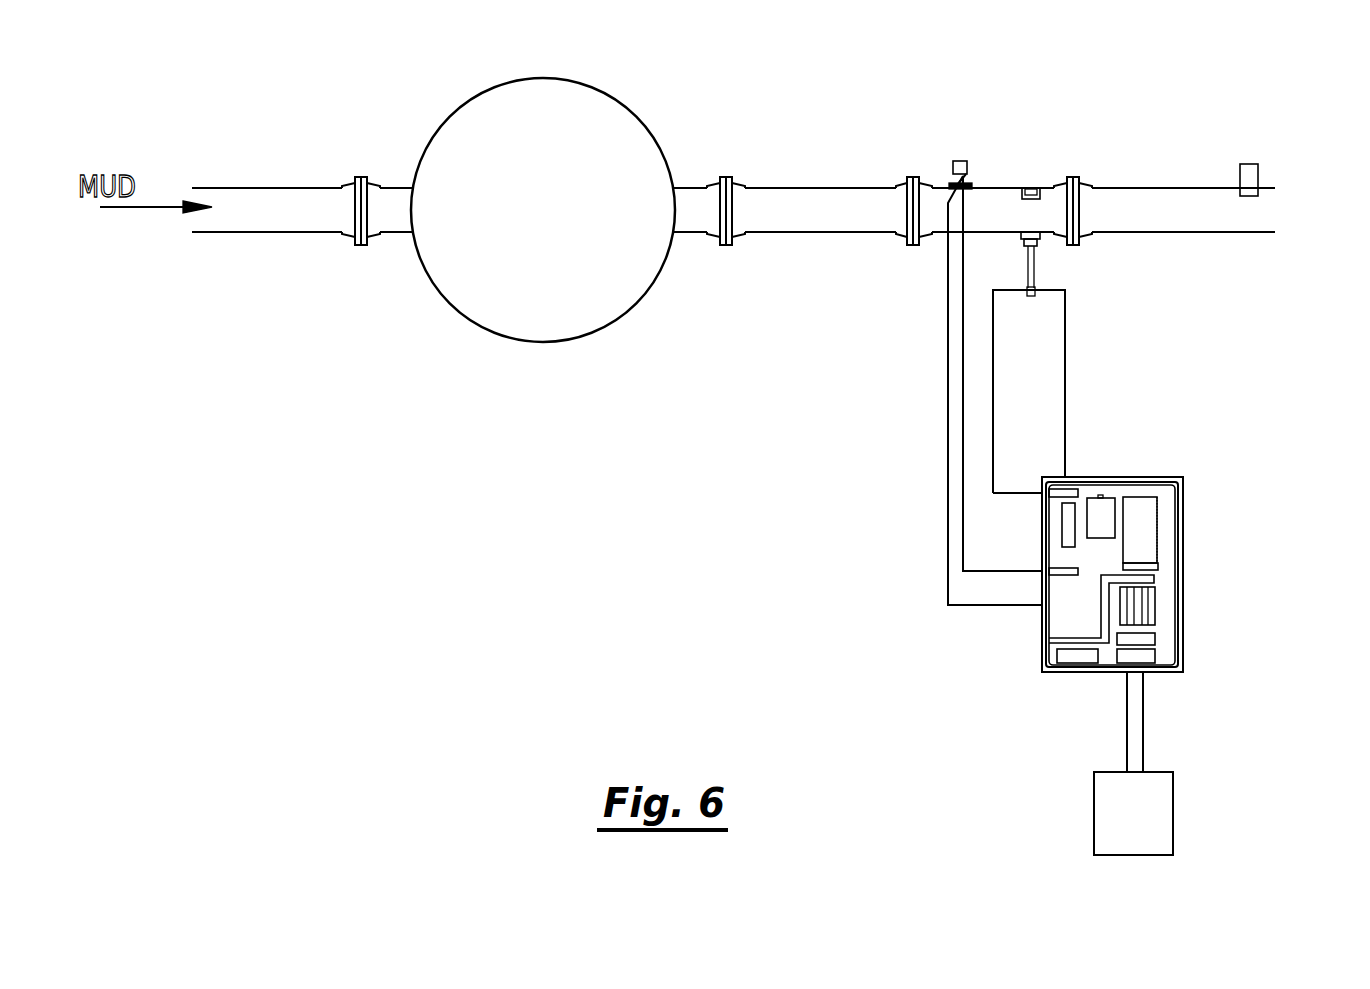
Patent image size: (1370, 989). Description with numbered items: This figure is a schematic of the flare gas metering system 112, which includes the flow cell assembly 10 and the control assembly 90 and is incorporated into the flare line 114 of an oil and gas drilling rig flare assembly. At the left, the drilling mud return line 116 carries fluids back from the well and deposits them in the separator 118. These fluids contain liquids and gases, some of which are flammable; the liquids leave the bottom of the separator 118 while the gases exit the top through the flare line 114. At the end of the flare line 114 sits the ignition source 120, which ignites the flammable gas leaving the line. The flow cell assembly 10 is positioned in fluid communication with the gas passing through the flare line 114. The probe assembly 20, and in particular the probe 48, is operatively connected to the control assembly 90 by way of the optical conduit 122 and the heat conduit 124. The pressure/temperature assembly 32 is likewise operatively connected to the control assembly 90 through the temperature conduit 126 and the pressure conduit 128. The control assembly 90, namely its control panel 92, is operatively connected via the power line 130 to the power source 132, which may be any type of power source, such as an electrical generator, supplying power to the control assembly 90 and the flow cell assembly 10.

The flow cell assembly 10 is at (998, 170).
The probe assembly 20 is at (1036, 250).
The pressure/temperature assembly 32 is at (959, 160).
The probe 48 is at (1036, 268).
The control assembly 90 is at (1198, 594).
The control panel 92 is at (1070, 675).
The flare gas metering system 112 is at (1255, 388).
The flare line 114 is at (793, 195).
The drilling mud return line 116 is at (270, 205).
The separator 118 is at (601, 90).
The ignition source 120 is at (1248, 168).
The optical conduit 122 is at (1066, 413).
The heat conduit 124 is at (995, 384).
The temperature conduit 126 is at (990, 570).
The pressure conduit 128 is at (982, 607).
The power line 130 is at (1144, 713).
The power source 132 is at (1107, 816).